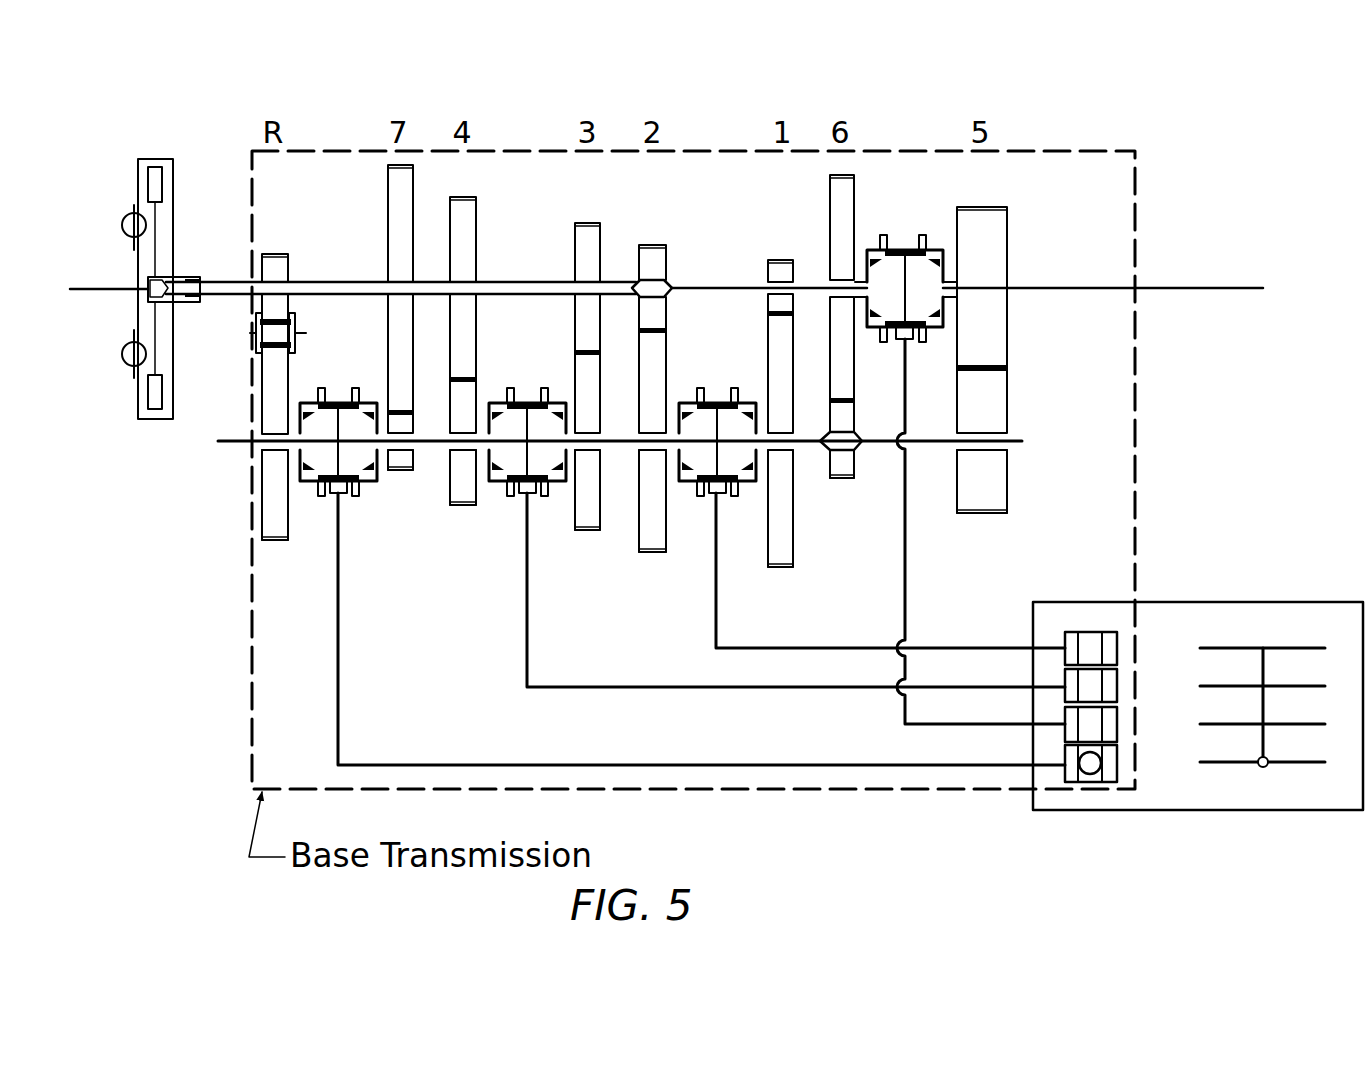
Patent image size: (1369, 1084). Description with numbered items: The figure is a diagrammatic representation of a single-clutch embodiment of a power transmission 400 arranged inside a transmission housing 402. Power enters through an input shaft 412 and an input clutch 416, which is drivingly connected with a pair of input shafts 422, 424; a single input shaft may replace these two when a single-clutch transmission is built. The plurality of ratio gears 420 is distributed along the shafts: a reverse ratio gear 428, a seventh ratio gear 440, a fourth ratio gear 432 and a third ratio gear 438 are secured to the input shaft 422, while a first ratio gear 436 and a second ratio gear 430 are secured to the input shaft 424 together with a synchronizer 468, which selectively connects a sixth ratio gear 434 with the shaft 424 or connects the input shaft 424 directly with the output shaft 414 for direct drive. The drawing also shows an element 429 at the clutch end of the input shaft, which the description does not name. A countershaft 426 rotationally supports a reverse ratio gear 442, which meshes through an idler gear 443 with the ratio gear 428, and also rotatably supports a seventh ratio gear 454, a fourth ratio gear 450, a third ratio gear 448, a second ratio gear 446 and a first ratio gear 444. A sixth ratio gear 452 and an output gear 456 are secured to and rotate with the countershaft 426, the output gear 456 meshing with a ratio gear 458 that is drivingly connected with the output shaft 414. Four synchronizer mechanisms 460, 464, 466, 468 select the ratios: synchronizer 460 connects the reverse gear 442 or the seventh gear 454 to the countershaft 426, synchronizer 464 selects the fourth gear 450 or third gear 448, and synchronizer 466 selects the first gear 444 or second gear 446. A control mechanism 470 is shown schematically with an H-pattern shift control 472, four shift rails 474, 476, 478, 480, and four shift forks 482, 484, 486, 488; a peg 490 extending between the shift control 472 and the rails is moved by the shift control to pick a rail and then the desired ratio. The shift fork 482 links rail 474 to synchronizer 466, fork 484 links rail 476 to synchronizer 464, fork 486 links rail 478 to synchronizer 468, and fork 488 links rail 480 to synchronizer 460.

The power transmission 400 is at (1160, 222).
The transmission housing 402 is at (1090, 148).
The input shaft 412 is at (84, 283).
The output shaft 414 is at (1213, 282).
The input clutch 416 is at (167, 152).
The ratio gears 420 is at (600, 605).
The input shaft 422 is at (222, 305).
The input shaft 424 is at (740, 282).
The countershaft 426 is at (218, 442).
The reverse ratio gear 428 is at (275, 252).
The clutch actuator 429 is at (172, 288).
The second ratio gear 430 is at (667, 250).
The fourth ratio gear 432 is at (477, 216).
The sixth ratio gear 434 is at (855, 203).
The first ratio gear 436 is at (794, 265).
The third ratio gear 438 is at (600, 225).
The seventh ratio gear 440 is at (388, 238).
The reverse ratio gear 442 is at (290, 525).
The idler gear 443 is at (296, 330).
The first ratio gear 444 is at (793, 550).
The second ratio gear 446 is at (666, 540).
The third ratio gear 448 is at (600, 515).
The fourth ratio gear 450 is at (477, 497).
The sixth ratio gear 452 is at (856, 463).
The seventh ratio gear 454 is at (413, 460).
The output gear 456 is at (1008, 488).
The ratio gear 458 is at (1008, 338).
The synchronizer mechanism 460 is at (340, 392).
The synchronizer mechanism 464 is at (529, 392).
The synchronizer mechanism 466 is at (719, 392).
The synchronizer 468 is at (906, 244).
The control mechanism 470 is at (1215, 600).
The shift control 472 is at (1266, 640).
The shift rail 474 is at (1065, 641).
The shift rail 476 is at (1065, 680).
The shift rail 478 is at (1065, 719).
The shift rail 480 is at (1065, 758).
The shift fork 482 is at (745, 650).
The shift fork 484 is at (752, 690).
The shift fork 486 is at (908, 590).
The shift fork 488 is at (760, 768).
The peg 490 is at (1263, 768).